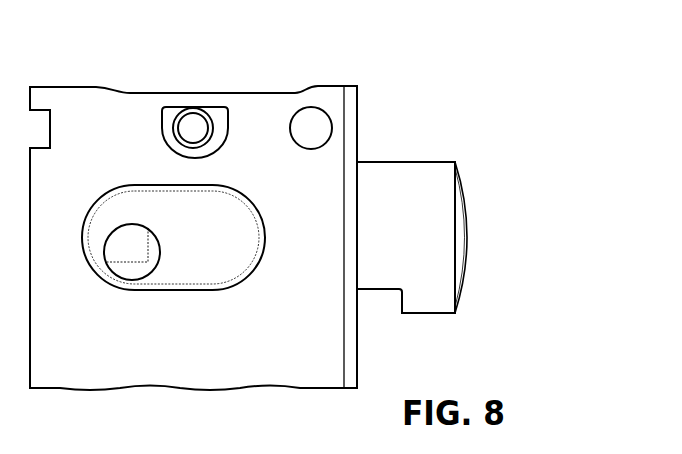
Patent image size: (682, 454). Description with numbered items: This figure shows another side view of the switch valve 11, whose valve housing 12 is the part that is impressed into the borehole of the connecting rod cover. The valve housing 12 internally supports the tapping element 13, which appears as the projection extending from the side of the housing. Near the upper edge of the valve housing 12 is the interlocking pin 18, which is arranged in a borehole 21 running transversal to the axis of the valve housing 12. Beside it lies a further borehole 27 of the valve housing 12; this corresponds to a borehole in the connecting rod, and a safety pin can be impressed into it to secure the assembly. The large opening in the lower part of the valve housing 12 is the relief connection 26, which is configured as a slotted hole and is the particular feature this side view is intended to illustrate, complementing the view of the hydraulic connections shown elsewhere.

The switch valve 11 is at (527, 144).
The valve housing 12 is at (368, 120).
The tapping element 13 is at (482, 228).
The interlocking pin 18 is at (188, 126).
The borehole 21 is at (203, 130).
The relief connection 26 is at (192, 260).
The borehole 27 is at (308, 125).